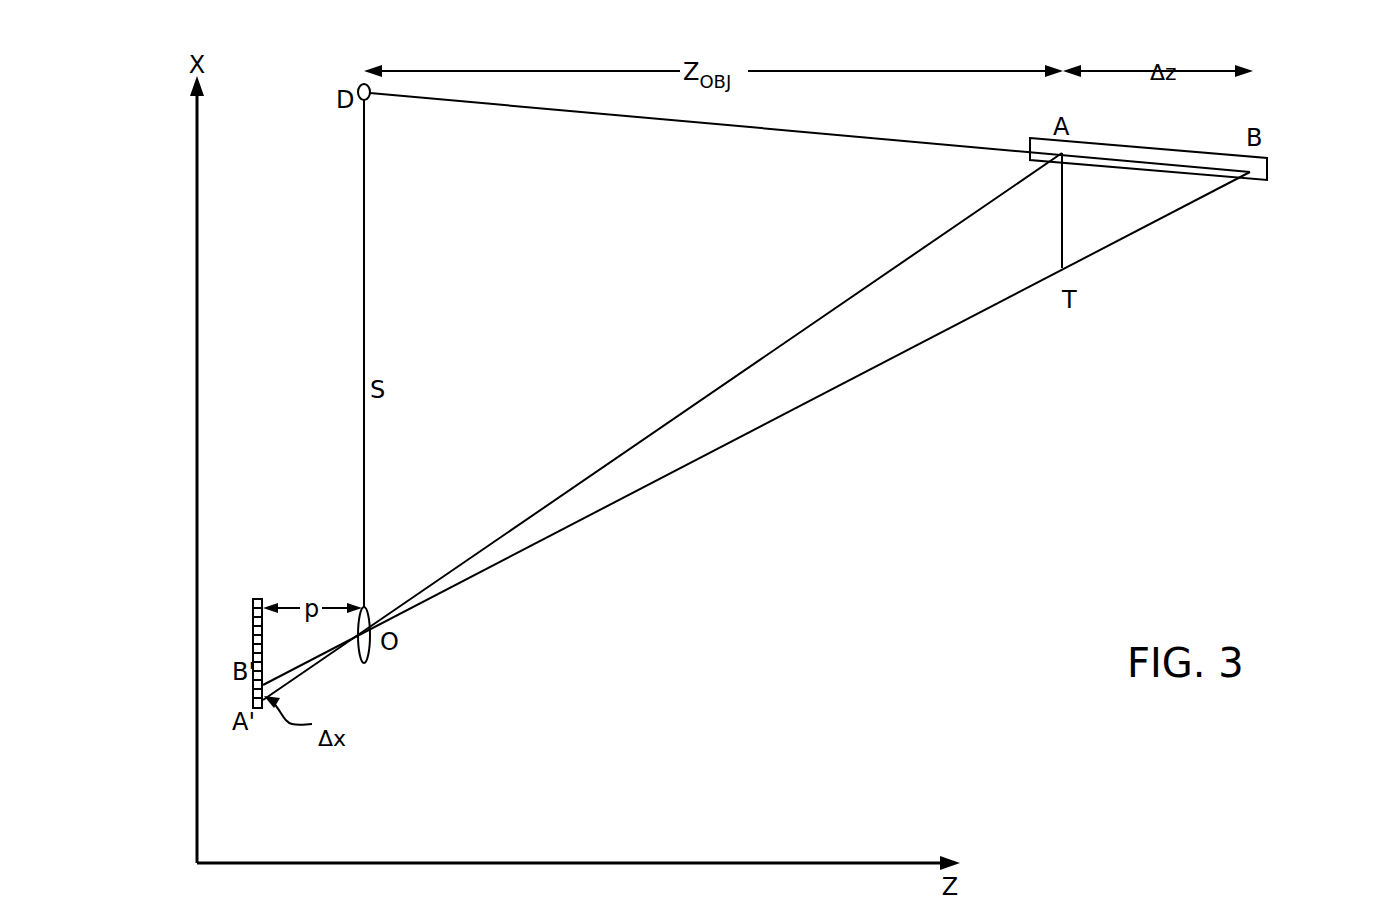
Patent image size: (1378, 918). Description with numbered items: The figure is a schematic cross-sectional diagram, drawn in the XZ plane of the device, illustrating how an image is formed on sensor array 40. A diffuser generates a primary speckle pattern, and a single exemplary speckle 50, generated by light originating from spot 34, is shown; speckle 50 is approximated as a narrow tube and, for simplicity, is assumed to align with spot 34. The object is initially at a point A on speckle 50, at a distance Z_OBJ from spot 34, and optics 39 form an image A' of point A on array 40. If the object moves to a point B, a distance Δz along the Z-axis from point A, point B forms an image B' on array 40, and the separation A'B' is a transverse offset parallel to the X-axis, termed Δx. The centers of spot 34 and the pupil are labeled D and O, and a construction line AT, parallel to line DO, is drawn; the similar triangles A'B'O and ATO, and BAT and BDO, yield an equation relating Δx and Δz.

The spot 34 is at (368, 98).
The optics 39 is at (367, 662).
The sensor array 40 is at (258, 599).
The speckle 50 is at (1265, 170).